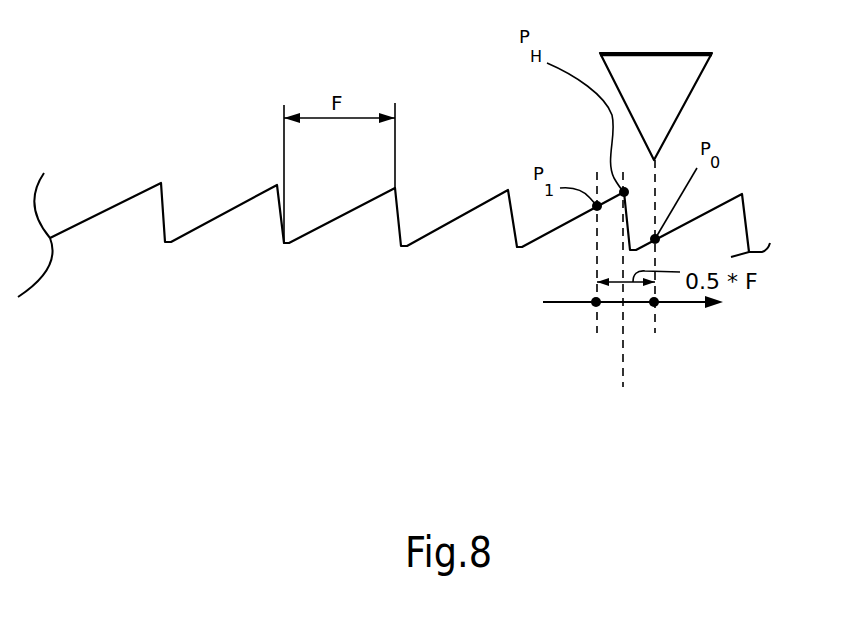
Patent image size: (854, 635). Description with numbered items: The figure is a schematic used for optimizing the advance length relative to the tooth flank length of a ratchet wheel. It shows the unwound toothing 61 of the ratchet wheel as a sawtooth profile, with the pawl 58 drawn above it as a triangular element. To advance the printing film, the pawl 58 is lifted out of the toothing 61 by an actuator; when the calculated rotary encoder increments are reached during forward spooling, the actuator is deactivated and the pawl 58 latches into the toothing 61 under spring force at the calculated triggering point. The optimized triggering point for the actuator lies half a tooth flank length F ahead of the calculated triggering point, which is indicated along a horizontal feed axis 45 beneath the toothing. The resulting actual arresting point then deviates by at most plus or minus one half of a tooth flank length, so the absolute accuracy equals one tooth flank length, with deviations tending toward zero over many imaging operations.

The pawl 58 is at (698, 66).
The toothing 61 is at (737, 213).
The feed direction axis 45 is at (562, 303).